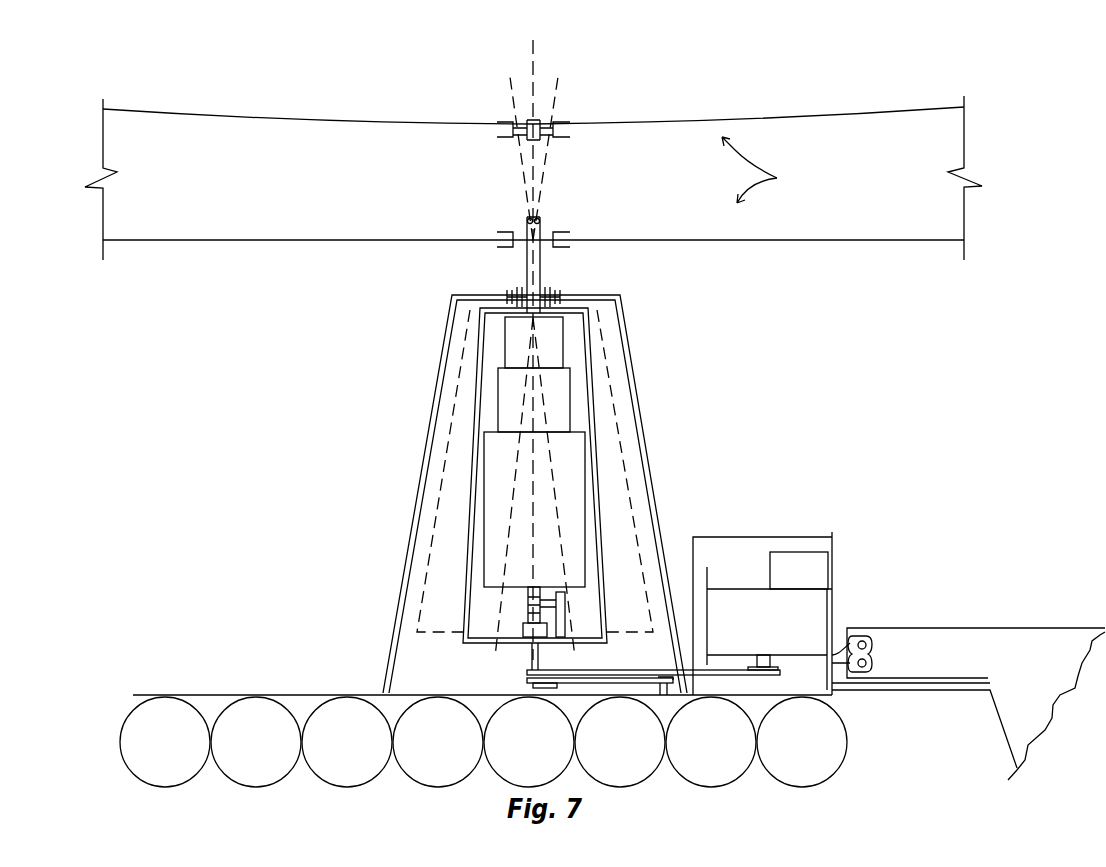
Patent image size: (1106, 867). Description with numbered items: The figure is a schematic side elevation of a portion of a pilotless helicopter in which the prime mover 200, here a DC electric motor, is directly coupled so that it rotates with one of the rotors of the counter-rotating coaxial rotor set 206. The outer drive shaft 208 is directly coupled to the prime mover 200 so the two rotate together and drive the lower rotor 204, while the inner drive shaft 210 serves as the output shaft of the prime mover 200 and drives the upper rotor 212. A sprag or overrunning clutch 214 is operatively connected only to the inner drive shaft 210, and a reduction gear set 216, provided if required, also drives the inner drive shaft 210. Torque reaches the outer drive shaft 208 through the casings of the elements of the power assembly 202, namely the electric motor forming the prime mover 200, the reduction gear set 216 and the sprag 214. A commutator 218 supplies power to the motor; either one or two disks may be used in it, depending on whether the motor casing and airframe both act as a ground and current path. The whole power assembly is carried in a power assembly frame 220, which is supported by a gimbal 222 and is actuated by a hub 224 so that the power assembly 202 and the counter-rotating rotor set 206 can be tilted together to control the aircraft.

The prime mover 200 is at (574, 525).
The power assembly 202 is at (623, 473).
The lower rotor 204 is at (780, 239).
The counter-rotating coaxial rotor set 206 is at (769, 170).
The outer drive shaft 208 is at (542, 260).
The inner drive shaft 210 is at (535, 170).
The upper rotor 212 is at (647, 122).
The sprag or overrunning clutch 214 is at (552, 354).
The reduction gear set 216 is at (552, 416).
The commutator 218 is at (507, 610).
The power assembly frame 220 is at (593, 382).
The gimbal 222 is at (560, 287).
The hub 224 is at (532, 660).